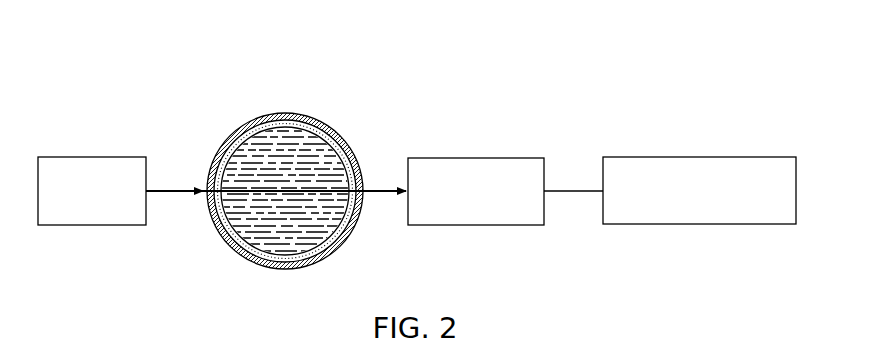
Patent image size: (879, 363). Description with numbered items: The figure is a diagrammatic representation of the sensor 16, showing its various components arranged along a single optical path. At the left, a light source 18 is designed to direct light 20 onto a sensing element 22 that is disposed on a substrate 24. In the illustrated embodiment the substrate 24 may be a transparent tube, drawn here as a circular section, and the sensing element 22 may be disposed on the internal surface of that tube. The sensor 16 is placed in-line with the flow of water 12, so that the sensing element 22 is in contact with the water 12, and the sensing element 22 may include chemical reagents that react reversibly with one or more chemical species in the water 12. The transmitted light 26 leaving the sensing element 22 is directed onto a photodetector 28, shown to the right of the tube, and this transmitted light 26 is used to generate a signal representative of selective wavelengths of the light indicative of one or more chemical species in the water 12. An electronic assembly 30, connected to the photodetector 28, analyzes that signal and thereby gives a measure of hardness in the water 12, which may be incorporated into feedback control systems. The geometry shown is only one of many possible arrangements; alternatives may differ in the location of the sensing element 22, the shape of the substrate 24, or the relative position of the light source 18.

The water 12 is at (286, 140).
The sensor 16 is at (708, 70).
The light source 18 is at (110, 157).
The light 20 is at (171, 188).
The sensing element 22 is at (336, 128).
The substrate 24 is at (228, 133).
The transmitted light 26 is at (389, 188).
The photodetector 28 is at (447, 158).
The electronic assembly 30 is at (667, 157).